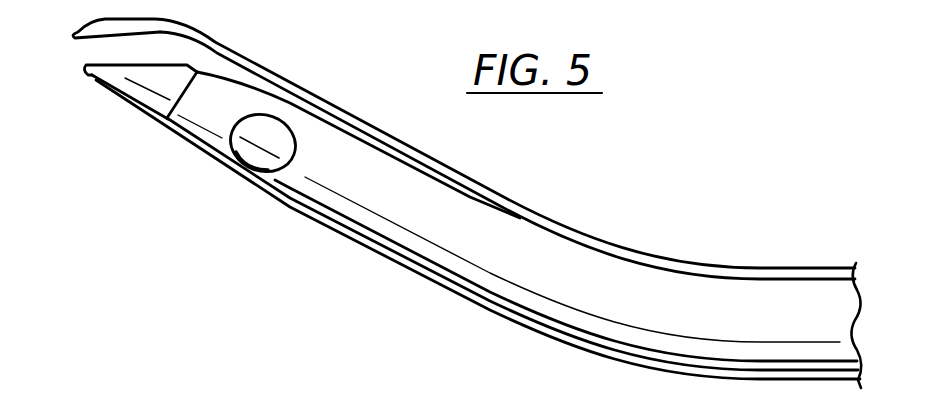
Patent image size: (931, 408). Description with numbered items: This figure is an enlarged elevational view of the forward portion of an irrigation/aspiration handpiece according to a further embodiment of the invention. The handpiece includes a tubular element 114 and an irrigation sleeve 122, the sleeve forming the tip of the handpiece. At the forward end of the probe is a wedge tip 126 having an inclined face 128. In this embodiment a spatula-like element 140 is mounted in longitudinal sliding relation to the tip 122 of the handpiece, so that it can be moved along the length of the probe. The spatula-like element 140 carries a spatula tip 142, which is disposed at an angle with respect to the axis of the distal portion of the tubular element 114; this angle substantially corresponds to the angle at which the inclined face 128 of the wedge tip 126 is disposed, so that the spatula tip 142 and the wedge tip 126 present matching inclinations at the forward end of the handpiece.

The tubular element 114 is at (126, 114).
The irrigation sleeve 122 is at (307, 212).
The wedge tip 126 is at (97, 82).
The inclined face 128 is at (117, 64).
The spatula-like element 140 is at (723, 222).
The spatula tip 142 is at (108, 20).